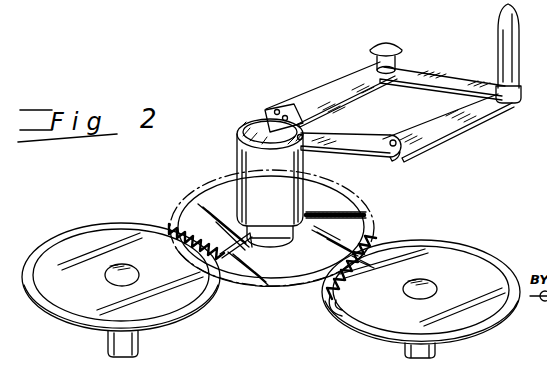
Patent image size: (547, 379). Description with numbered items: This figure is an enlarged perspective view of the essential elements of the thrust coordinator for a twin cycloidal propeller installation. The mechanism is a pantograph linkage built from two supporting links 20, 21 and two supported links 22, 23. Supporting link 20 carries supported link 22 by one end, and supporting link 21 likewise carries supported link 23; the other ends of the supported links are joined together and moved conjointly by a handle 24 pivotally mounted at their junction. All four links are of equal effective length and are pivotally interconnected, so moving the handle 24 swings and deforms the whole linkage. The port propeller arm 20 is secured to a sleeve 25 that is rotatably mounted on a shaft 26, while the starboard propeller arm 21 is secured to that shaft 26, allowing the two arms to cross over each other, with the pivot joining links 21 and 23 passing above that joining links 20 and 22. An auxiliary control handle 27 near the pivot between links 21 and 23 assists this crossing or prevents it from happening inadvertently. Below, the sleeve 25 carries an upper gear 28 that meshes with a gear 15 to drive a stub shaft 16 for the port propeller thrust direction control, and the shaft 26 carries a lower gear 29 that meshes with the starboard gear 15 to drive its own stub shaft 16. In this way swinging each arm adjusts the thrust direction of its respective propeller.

The gear 15 is at (103, 237).
The stub shaft 16 is at (128, 347).
The supporting link 20 is at (354, 141).
The supporting link 21 is at (318, 98).
The supported link 22 is at (438, 120).
The supported link 23 is at (452, 71).
The handle 24 is at (508, 36).
The sleeve 25 is at (240, 150).
The shaft 26 is at (262, 120).
The auxiliary control handle 27 is at (387, 44).
The upper gear 28 is at (217, 190).
The lower gear 29 is at (350, 230).